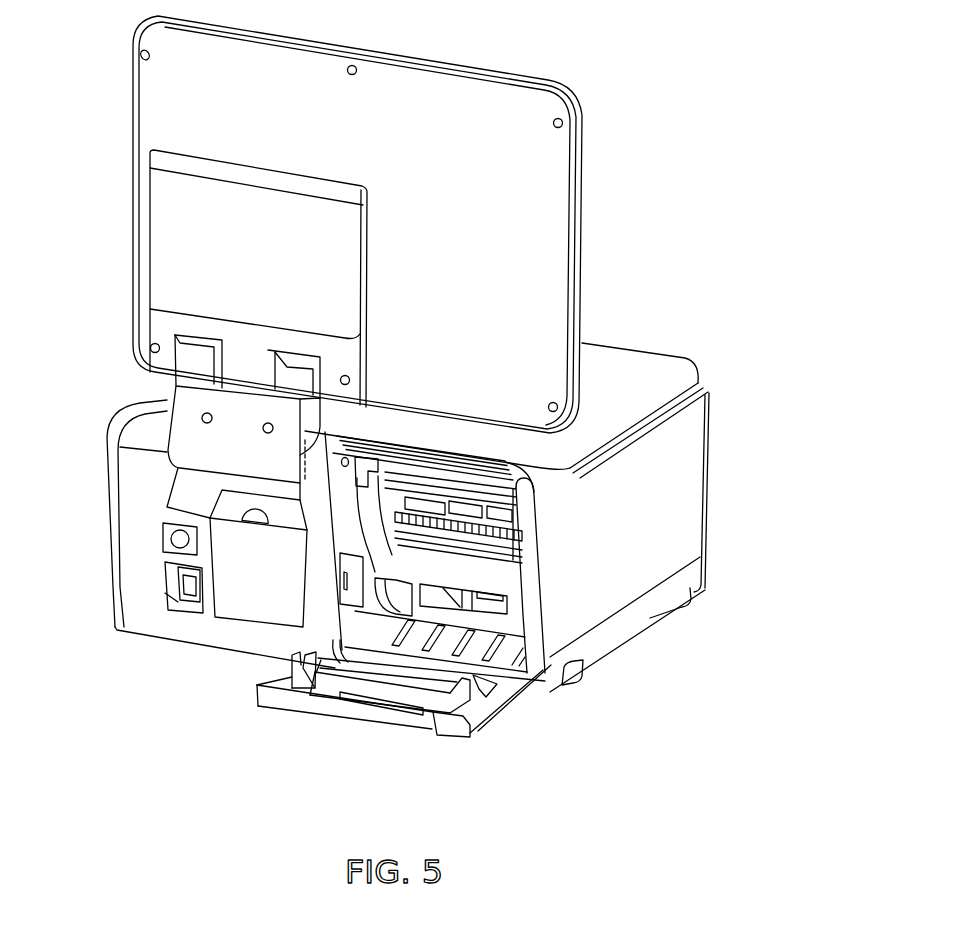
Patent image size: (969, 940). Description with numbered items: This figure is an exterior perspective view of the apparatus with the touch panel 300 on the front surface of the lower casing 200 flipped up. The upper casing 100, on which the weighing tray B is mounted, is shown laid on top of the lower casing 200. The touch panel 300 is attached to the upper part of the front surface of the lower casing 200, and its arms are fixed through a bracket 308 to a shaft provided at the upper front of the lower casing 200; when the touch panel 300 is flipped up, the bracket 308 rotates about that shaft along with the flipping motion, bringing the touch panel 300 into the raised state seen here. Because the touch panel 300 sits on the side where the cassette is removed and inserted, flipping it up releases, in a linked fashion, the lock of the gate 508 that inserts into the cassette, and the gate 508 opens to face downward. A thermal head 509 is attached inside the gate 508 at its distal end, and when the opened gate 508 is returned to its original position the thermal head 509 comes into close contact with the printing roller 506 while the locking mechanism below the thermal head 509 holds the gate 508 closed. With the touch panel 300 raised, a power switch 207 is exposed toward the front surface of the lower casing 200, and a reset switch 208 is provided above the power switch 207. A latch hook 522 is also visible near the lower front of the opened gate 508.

The upper casing 100 is at (661, 351).
The lower casing 200 is at (657, 517).
The touch panel 300 is at (511, 97).
The bracket 308 is at (168, 396).
The reset switch 208 is at (163, 534).
The power switch 207 is at (167, 597).
The printing roller 506 is at (483, 497).
The gate 508 is at (473, 727).
The thermal head 509 is at (369, 692).
The latch hook 522 is at (290, 660).
The weighing tray B is at (605, 357).